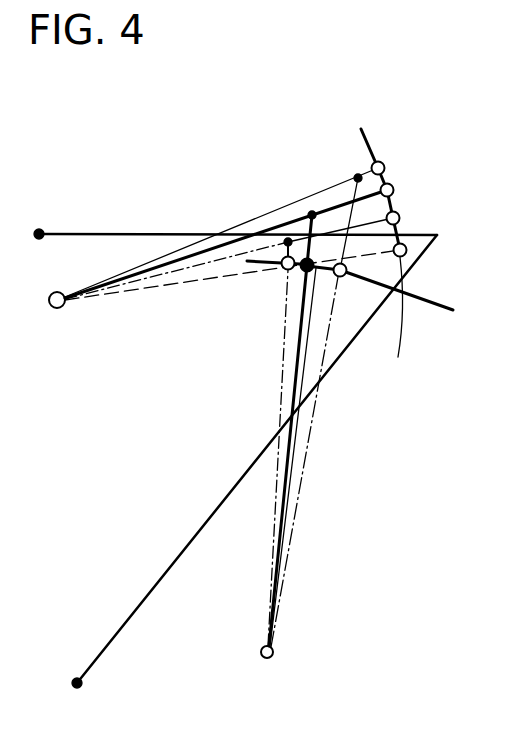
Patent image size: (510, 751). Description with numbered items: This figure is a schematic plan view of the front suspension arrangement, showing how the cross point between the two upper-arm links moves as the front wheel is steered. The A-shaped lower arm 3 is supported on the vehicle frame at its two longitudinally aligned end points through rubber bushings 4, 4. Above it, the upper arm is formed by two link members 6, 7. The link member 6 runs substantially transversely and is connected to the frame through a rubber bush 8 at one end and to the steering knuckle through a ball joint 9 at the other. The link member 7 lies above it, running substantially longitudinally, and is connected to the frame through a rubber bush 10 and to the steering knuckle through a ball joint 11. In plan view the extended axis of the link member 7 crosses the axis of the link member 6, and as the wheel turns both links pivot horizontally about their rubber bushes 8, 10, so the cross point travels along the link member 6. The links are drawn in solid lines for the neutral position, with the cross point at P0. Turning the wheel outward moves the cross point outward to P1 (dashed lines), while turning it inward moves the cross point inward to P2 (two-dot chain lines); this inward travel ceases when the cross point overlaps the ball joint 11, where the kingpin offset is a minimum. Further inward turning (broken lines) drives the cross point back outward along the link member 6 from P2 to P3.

The lower arm 3 is at (133, 613).
The rubber bushings 4 is at (40, 230).
The link member 6 is at (183, 255).
The link member 7 is at (287, 463).
The rubber bush 8 is at (58, 308).
The ball joint 9 is at (396, 186).
The rubber bush 10 is at (274, 650).
The ball joint 11 is at (285, 272).
The cross point position P0 is at (312, 211).
The cross point position P1 is at (358, 174).
The cross point position P2 is at (287, 239).
The cross point position P3 is at (309, 272).